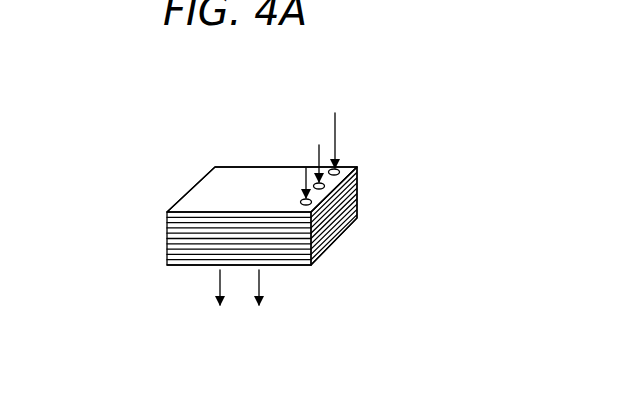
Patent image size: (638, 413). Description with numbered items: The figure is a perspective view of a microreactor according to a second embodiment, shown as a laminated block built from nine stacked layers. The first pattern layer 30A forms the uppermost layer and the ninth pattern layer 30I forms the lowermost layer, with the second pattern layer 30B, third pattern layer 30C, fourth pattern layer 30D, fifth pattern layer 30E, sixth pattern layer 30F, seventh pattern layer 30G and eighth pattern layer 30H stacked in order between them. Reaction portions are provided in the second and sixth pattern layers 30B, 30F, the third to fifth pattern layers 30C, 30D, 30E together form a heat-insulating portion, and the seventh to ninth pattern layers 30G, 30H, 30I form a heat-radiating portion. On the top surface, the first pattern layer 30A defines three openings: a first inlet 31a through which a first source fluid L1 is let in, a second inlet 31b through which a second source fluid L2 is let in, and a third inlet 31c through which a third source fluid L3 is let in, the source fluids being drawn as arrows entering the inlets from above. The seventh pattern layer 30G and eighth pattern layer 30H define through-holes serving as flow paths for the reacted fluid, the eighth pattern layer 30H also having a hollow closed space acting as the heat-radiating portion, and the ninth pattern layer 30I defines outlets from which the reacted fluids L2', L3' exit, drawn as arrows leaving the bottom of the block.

The first pattern layer 30A is at (190, 192).
The second pattern layer 30B is at (167, 215).
The third pattern layer 30C is at (167, 228).
The fourth pattern layer 30D is at (167, 237).
The fifth pattern layer 30E is at (167, 242).
The sixth pattern layer 30F is at (358, 193).
The seventh pattern layer 30G is at (358, 203).
The eighth pattern layer 30H is at (360, 212).
The ninth pattern layer 30I is at (359, 217).
The first inlet 31a is at (340, 168).
The second inlet 31b is at (356, 184).
The third inlet 31c is at (306, 205).
The first source fluid L1 is at (335, 125).
The second source fluid L2 is at (292, 148).
The third source fluid L3 is at (265, 164).
The reacted fluid L2' is at (221, 305).
The reacted fluid L3' is at (259, 305).